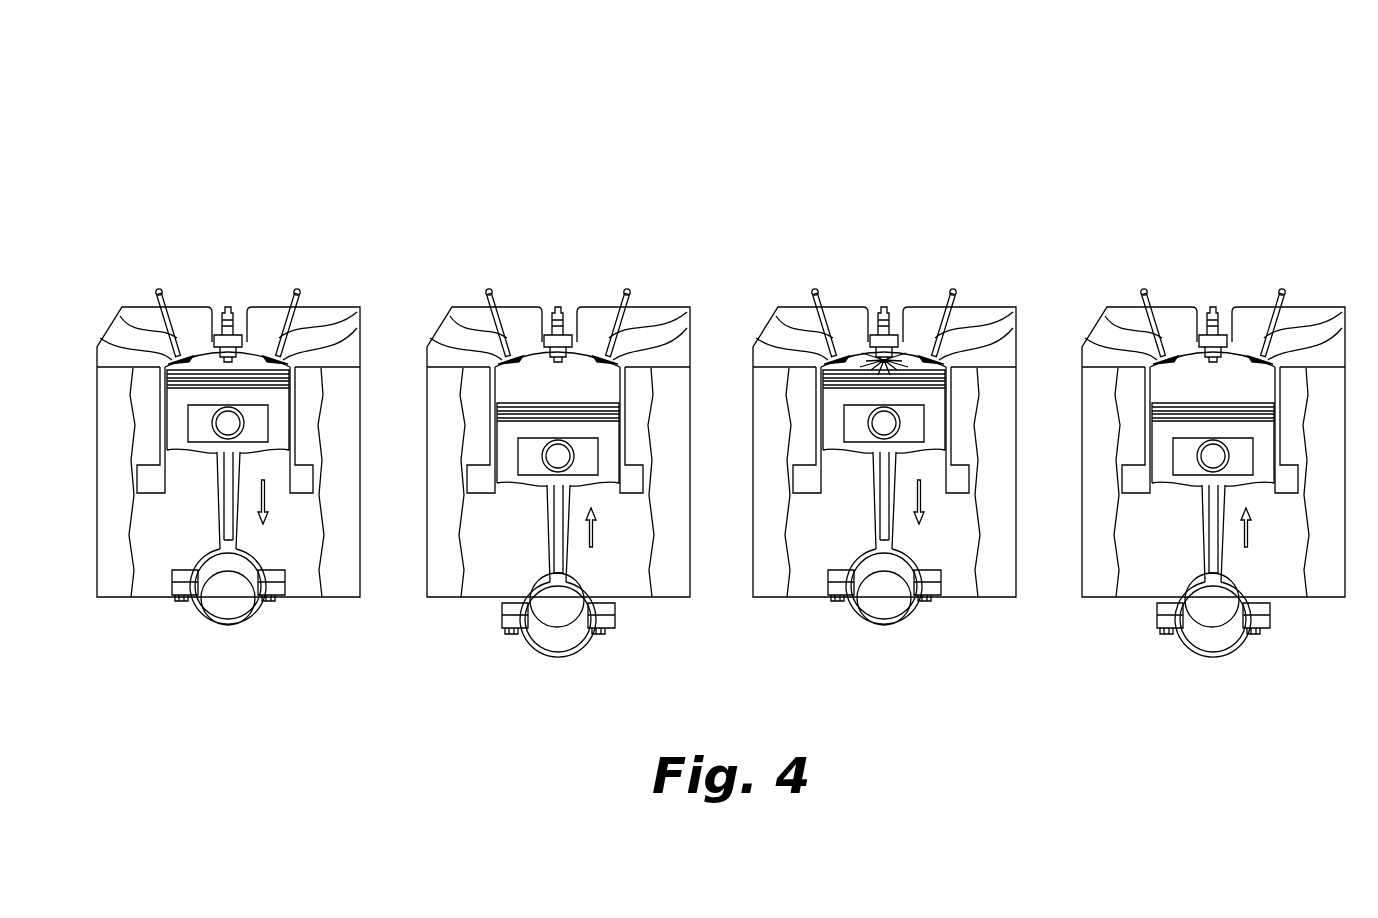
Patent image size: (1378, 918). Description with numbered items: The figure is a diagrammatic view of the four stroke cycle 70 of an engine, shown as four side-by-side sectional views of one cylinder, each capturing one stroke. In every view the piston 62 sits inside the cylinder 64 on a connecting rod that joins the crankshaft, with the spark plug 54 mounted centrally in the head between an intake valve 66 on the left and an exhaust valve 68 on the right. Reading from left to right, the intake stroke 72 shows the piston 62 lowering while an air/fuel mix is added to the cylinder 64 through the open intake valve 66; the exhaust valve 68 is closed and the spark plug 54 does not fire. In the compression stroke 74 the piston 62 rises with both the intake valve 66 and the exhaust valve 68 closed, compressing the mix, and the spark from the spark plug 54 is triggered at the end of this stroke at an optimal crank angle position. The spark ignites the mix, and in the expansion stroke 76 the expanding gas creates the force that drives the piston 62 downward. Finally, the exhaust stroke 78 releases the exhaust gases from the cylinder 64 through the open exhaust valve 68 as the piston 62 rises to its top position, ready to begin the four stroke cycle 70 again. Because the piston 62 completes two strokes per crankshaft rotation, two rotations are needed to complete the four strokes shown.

The spark plug 54 is at (217, 327).
The piston 62 is at (173, 425).
The cylinder 64 is at (165, 402).
The intake valve 66 is at (114, 334).
The exhaust valve 68 is at (361, 315).
The four stroke cycle 70 is at (392, 113).
The intake stroke 72 is at (217, 723).
The compression stroke 74 is at (545, 723).
The expansion stroke 76 is at (873, 723).
The exhaust stroke 78 is at (1201, 723).